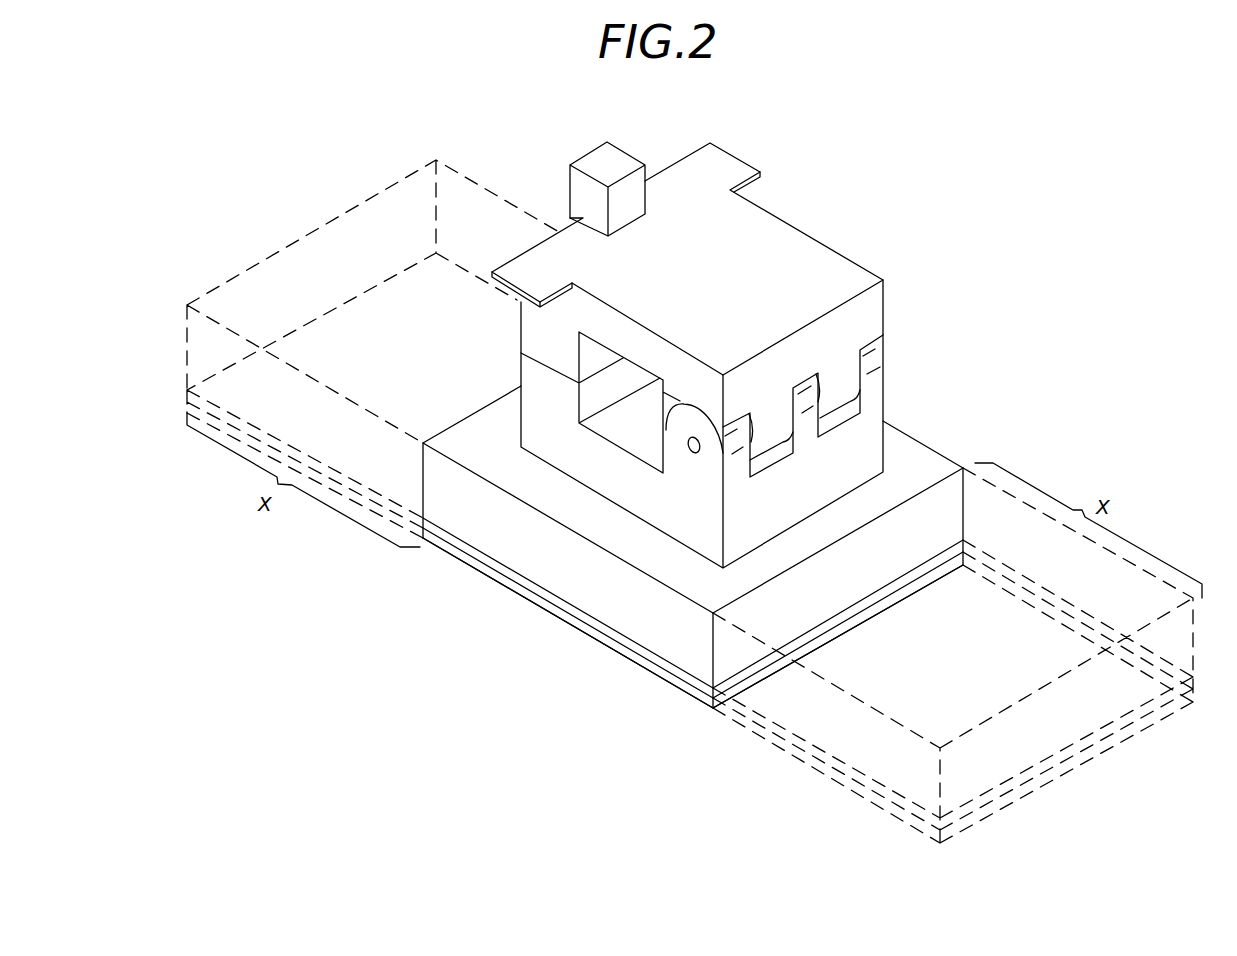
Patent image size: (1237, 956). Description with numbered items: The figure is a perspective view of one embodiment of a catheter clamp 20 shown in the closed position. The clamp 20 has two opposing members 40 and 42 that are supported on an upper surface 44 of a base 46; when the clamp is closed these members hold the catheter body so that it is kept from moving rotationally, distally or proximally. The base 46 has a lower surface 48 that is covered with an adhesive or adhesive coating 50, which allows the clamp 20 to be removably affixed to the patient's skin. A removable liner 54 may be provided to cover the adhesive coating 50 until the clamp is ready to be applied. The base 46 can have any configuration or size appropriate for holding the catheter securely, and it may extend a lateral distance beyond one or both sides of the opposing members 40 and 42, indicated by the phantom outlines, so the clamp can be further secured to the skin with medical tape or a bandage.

The clamp 20 is at (815, 143).
The opposing member 40 is at (807, 265).
The opposing member 42 is at (863, 448).
The upper surface 44 is at (927, 470).
The base 46 is at (632, 610).
The lower surface 48 is at (490, 558).
The adhesive coating 50 is at (548, 597).
The removable liner 54 is at (650, 677).